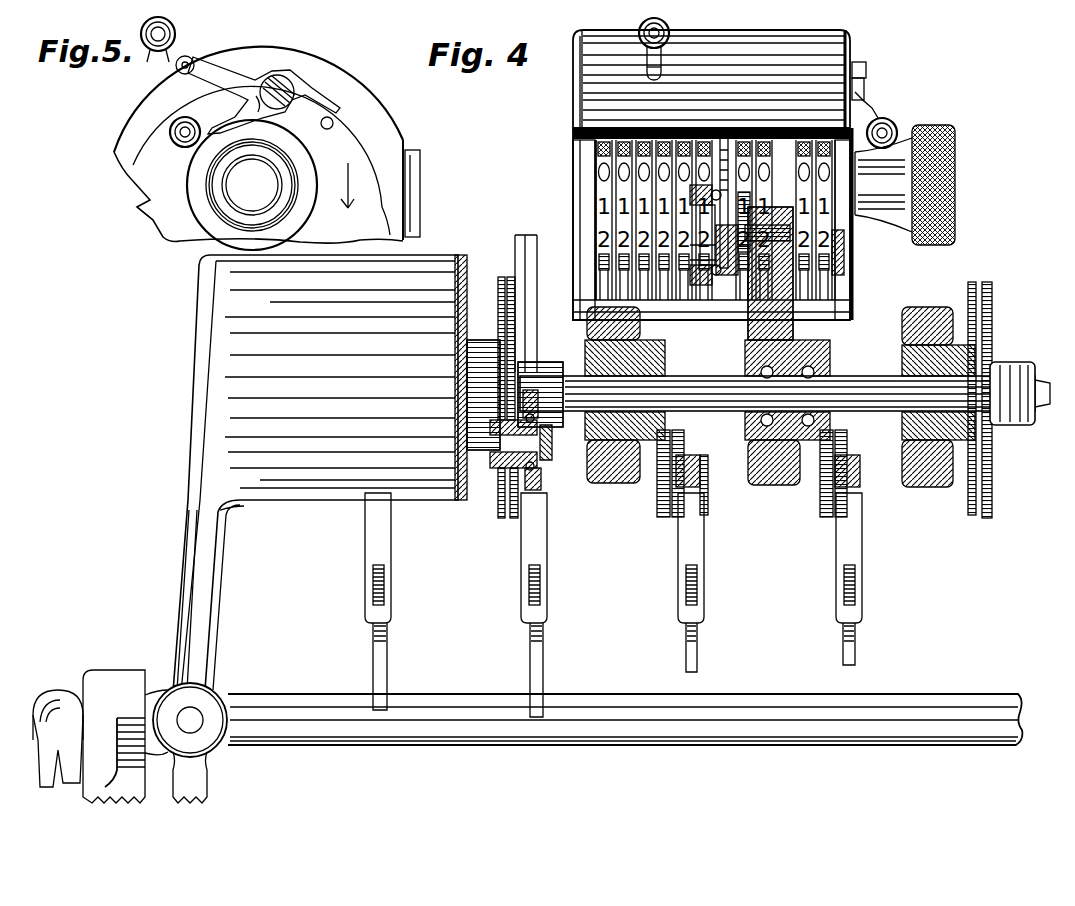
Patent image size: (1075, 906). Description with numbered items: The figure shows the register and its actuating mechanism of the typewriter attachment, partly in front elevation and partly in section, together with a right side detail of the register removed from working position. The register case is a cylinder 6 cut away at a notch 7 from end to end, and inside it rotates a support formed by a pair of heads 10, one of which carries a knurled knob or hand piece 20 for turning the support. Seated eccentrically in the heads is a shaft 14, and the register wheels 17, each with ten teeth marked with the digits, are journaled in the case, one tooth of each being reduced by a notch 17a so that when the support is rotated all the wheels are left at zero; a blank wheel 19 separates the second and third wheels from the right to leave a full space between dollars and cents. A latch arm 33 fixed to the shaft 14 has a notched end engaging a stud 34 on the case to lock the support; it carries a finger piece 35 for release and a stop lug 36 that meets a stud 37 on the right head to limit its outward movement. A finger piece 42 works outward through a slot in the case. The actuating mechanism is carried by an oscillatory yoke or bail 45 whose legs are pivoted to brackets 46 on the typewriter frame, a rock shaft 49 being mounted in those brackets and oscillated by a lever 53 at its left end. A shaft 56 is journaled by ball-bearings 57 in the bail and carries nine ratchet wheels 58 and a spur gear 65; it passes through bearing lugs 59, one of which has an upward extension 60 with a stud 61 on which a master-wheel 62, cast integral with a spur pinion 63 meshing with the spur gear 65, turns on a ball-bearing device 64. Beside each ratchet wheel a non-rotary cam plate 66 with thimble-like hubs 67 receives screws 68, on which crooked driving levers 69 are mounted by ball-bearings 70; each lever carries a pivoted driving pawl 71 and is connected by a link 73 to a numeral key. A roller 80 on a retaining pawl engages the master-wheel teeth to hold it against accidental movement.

In FIG. 4, the cylinder 6 is at (605, 58).
In FIG. 4, the cutaway portion 7 is at (645, 140).
In FIG. 4, the heads 10 is at (580, 192).
In FIG. 5, the shaft 14 is at (320, 80).
In FIG. 5, the wheels 17 is at (148, 212).
In FIG. 4, the wheels 17 is at (620, 135).
In FIG. 4, the notch 17a is at (600, 178).
In FIG. 4, the spacing washer or blank wheel 19 is at (770, 190).
In FIG. 5, the knurled knob or hand piece 20 is at (235, 212).
In FIG. 4, the knurled knob or hand piece 20 is at (955, 200).
In FIG. 5, the latch arm 33 is at (243, 86).
In FIG. 4, the latch arm 33 is at (866, 82).
In FIG. 5, the stud 34 is at (182, 75).
In FIG. 4, the stud 34 is at (866, 64).
In FIG. 5, the finger piece 35 is at (180, 147).
In FIG. 4, the finger piece 35 is at (885, 118).
In FIG. 5, the stop lug 36 is at (330, 103).
In FIG. 5, the stud 37 is at (334, 122).
In FIG. 5, the finger piece 42 is at (176, 30).
In FIG. 4, the finger piece 42 is at (668, 42).
In FIG. 4, the yoke or bail 45 is at (220, 540).
In FIG. 4, the brackets 46 is at (116, 680).
In FIG. 4, the rock shaft 49 is at (445, 700).
In FIG. 4, the lever 53 is at (60, 705).
In FIG. 4, the shaft 56 is at (960, 392).
In FIG. 4, the ball-bearings 57 is at (740, 455).
In FIG. 4, the ratchet wheels 58 is at (678, 518).
In FIG. 4, the bearing lugs 59 is at (618, 483).
In FIG. 4, the upward extension 60 is at (790, 320).
In FIG. 4, the stud 61 is at (800, 140).
In FIG. 4, the master-wheel 62 is at (728, 135).
In FIG. 4, the spur pinion 63 is at (720, 140).
In FIG. 4, the ball-bearing device 64 is at (742, 180).
In FIG. 4, the spur gear 65 is at (515, 335).
In FIG. 4, the pawl-guiding cam plate 66 is at (520, 360).
In FIG. 4, the thimble-like hubs 67 is at (490, 470).
In FIG. 4, the screws 68 is at (548, 460).
In FIG. 4, the driving lever 69 is at (530, 290).
In FIG. 4, the ball-bearing 70 is at (515, 520).
In FIG. 4, the driving pawl 71 is at (515, 250).
In FIG. 4, the links 73 is at (388, 660).
In FIG. 4, the roller 80 is at (498, 300).